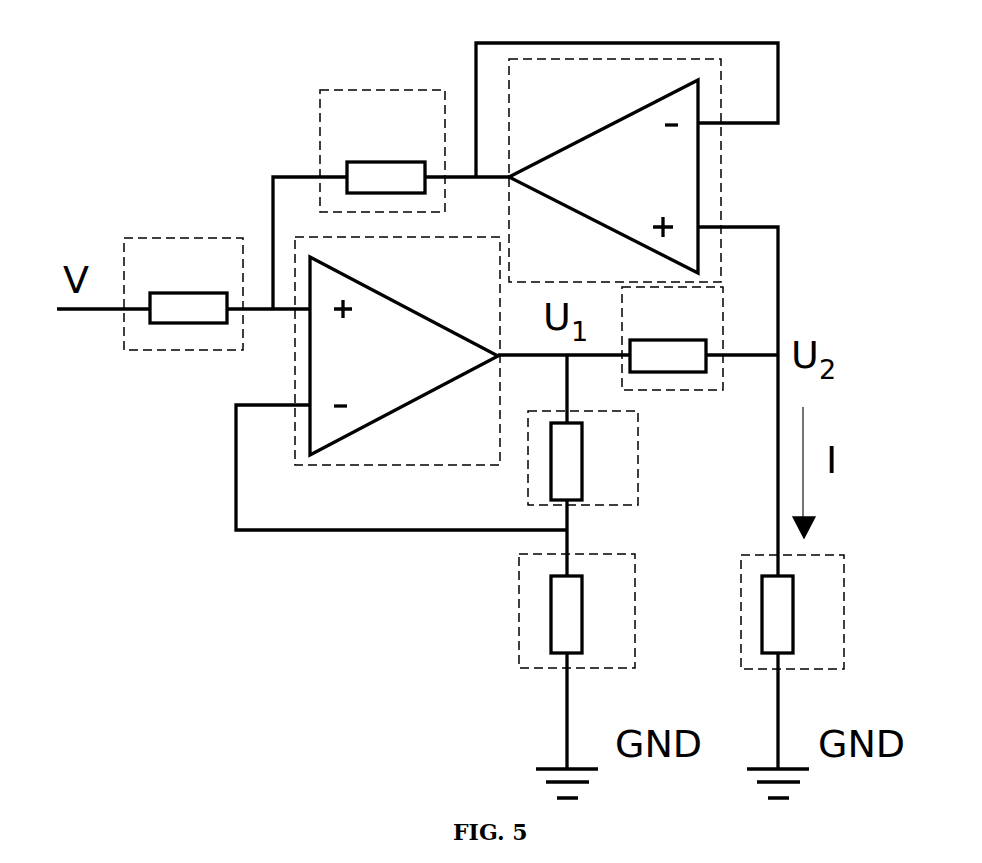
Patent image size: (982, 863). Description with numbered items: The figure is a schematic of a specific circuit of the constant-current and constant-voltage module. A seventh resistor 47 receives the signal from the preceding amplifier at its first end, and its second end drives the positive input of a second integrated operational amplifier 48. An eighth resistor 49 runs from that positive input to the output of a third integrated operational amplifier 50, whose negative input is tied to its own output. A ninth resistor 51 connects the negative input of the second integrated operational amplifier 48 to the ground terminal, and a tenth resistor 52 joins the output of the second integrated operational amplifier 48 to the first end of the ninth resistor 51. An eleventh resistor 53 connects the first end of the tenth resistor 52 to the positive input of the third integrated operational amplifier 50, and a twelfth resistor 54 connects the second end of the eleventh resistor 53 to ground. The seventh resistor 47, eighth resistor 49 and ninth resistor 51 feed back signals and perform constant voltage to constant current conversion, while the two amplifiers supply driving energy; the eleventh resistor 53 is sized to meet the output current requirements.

The seventh resistor 47 is at (157, 237).
The second integrated operational amplifier 48 is at (295, 437).
The eighth resistor 49 is at (320, 158).
The third integrated operational amplifier 50 is at (722, 183).
The ninth resistor 51 is at (635, 612).
The tenth resistor 52 is at (638, 457).
The eleventh resistor 53 is at (723, 313).
The twelfth resistor 54 is at (817, 557).